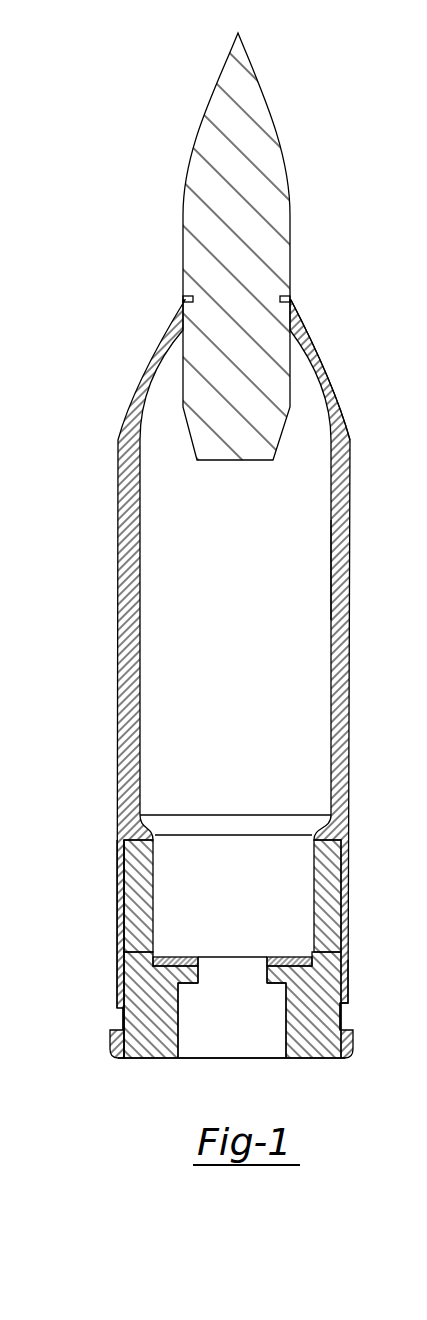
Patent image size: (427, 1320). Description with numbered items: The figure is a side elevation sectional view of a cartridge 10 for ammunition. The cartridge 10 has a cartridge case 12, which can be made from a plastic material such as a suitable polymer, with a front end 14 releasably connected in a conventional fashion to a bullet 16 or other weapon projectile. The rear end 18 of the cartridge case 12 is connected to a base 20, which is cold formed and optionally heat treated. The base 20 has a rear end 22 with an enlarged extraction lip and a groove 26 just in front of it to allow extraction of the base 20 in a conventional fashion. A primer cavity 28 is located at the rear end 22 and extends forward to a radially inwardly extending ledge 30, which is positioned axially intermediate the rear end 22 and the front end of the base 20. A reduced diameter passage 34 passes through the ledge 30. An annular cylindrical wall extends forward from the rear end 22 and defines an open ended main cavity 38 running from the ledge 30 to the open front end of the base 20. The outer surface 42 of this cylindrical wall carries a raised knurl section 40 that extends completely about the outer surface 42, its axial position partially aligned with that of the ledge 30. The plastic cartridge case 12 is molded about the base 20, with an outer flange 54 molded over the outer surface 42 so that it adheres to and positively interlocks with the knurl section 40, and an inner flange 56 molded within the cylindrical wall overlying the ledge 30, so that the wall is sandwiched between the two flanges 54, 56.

The cartridge 10 is at (312, 248).
The cartridge case 12 is at (122, 620).
The front end 14 is at (167, 323).
The bullet 16 is at (250, 213).
The rear end 18 is at (348, 993).
The base 20 is at (131, 1061).
The rear end 22 is at (379, 570).
The groove 26 is at (426, 472).
The primer cavity 28 is at (233, 1045).
The ledge 30 is at (180, 970).
The reduced diameter passage 34 is at (228, 970).
The main cavity 38 is at (251, 893).
The knurl section 40 is at (426, 422).
The outer surface 42 is at (426, 302).
The outer flange 54 is at (117, 902).
The inner flange 56 is at (183, 983).